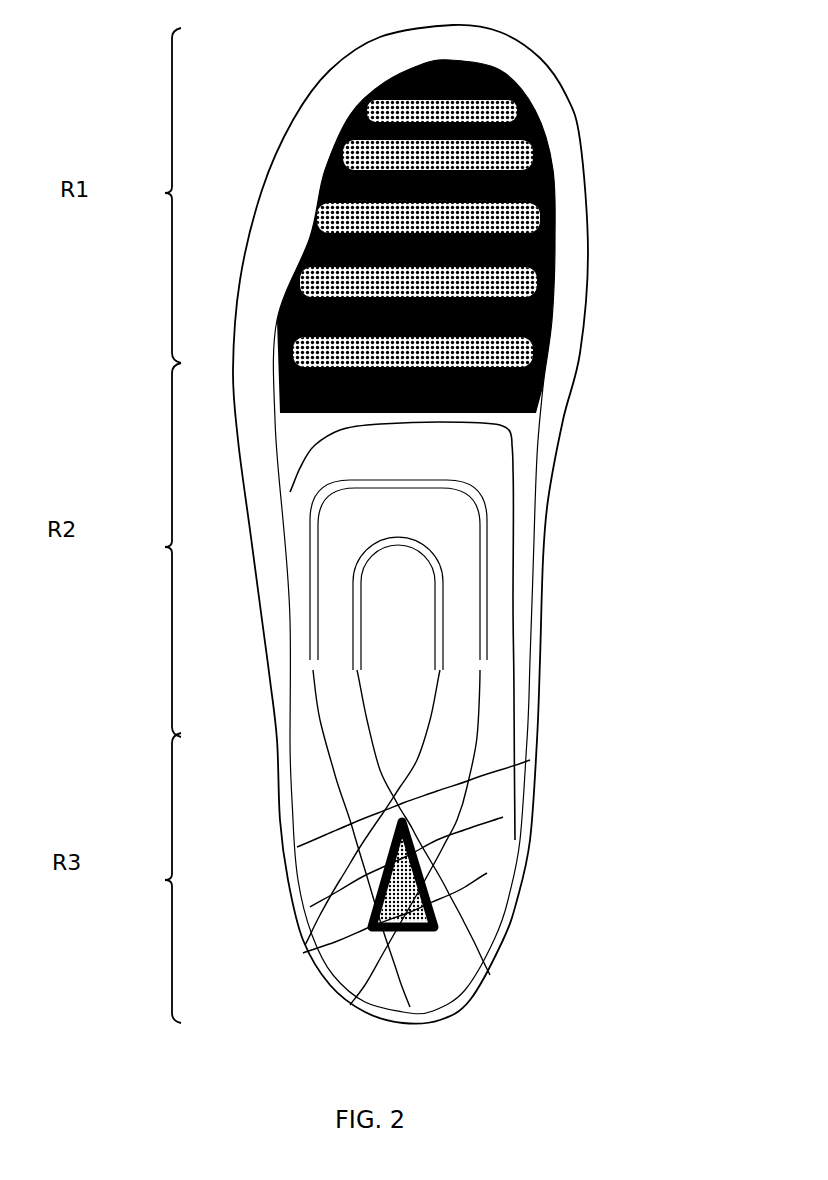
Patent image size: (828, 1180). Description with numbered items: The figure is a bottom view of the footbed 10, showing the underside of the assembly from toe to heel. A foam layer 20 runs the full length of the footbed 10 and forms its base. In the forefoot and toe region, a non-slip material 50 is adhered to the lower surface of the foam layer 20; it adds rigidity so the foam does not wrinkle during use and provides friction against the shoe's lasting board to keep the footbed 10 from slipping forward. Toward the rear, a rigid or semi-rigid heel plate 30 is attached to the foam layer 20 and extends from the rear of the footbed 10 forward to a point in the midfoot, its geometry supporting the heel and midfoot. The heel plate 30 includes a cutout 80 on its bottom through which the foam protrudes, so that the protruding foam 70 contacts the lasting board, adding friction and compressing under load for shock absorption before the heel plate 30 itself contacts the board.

The footbed 10 is at (603, 475).
The foam layer 20 is at (545, 413).
The heel plate 30 is at (363, 437).
The non-slip material 50 is at (547, 178).
The protruding foam 70 is at (398, 902).
The cutout 80 is at (440, 910).